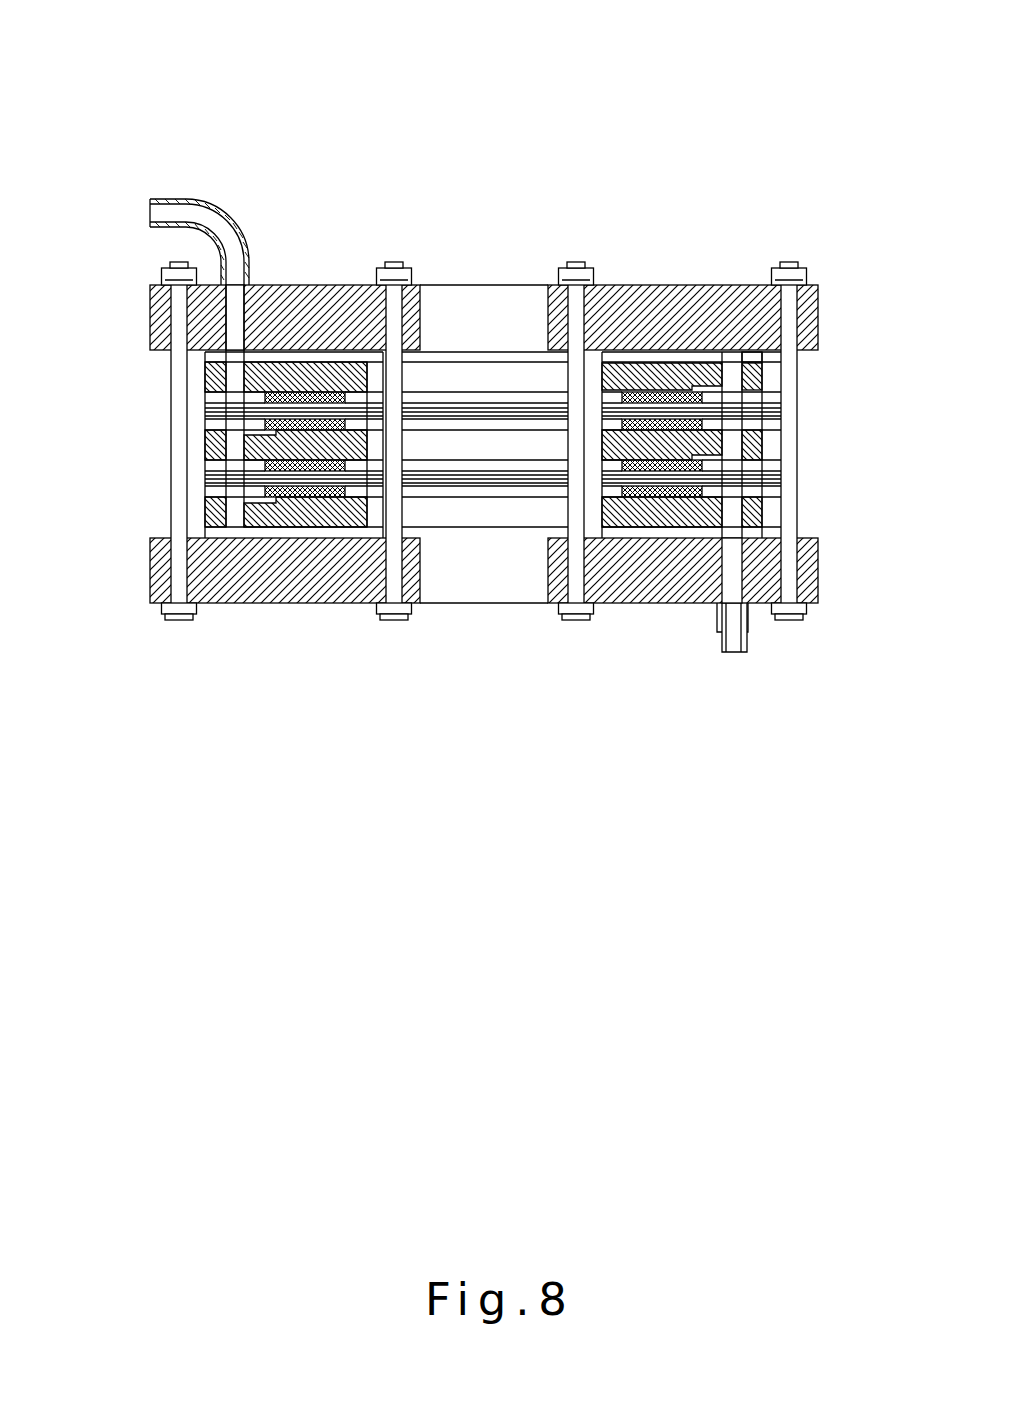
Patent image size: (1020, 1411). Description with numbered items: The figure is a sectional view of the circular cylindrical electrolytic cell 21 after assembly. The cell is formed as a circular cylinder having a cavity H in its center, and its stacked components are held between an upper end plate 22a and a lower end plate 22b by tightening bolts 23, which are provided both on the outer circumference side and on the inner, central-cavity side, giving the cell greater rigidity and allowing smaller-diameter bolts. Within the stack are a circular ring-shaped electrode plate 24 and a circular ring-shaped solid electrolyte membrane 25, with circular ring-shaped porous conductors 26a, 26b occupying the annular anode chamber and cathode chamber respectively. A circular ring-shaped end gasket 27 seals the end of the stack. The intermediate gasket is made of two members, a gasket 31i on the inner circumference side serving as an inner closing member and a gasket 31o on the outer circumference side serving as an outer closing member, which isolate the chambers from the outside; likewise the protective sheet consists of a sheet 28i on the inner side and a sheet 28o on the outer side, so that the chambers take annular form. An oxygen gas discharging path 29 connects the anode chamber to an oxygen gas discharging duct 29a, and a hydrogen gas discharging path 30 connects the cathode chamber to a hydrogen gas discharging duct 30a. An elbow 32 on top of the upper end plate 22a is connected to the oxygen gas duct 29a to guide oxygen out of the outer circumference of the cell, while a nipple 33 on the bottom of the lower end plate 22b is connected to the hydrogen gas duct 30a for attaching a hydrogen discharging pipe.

The circular cylindrical electrolytic cell 21 is at (613, 105).
The upper end plate 22a is at (745, 287).
The lower end plate 22b is at (817, 565).
The bolts 23 is at (397, 322).
The circular ring-shaped electrode plate 24 is at (207, 378).
The circular ring-shaped solid electrolyte membrane 25 is at (207, 413).
The circular ring-shaped porous conductor (anode chamber) 26a is at (725, 450).
The circular ring-shaped porous conductor (cathode chamber) 26b is at (673, 392).
The circular ring-shaped end gasket 27 is at (750, 358).
The inner circumference side protective sheet 28i is at (358, 405).
The outer circumference side protective sheet 28o is at (207, 396).
The oxygen gas discharging path 29 is at (207, 490).
The oxygen gas discharging duct 29a is at (233, 313).
The hydrogen gas discharging path 30 is at (722, 362).
The hydrogen gas discharging duct 30a is at (733, 640).
The inner circumference side gasket 31i is at (612, 395).
The outer circumference side gasket 31o is at (752, 397).
The elbow 32 is at (162, 200).
The nipple 33 is at (753, 608).
The cavity H is at (495, 305).